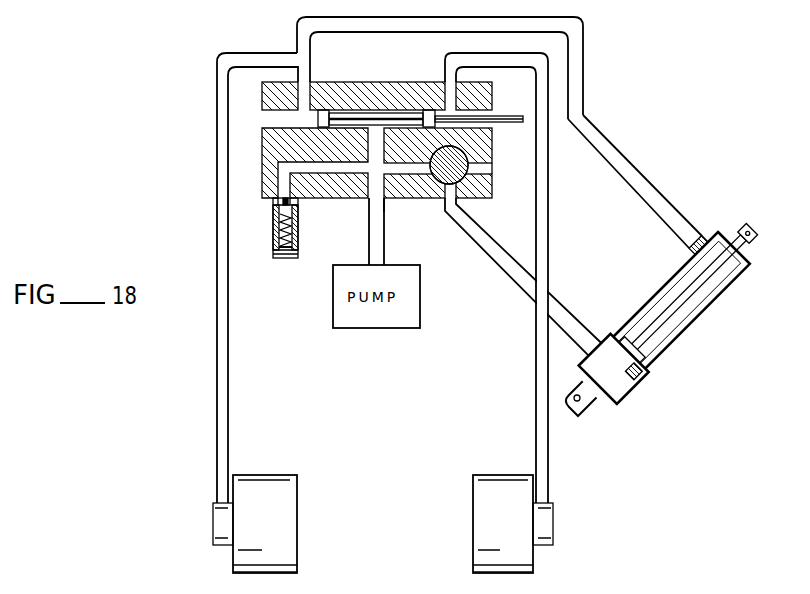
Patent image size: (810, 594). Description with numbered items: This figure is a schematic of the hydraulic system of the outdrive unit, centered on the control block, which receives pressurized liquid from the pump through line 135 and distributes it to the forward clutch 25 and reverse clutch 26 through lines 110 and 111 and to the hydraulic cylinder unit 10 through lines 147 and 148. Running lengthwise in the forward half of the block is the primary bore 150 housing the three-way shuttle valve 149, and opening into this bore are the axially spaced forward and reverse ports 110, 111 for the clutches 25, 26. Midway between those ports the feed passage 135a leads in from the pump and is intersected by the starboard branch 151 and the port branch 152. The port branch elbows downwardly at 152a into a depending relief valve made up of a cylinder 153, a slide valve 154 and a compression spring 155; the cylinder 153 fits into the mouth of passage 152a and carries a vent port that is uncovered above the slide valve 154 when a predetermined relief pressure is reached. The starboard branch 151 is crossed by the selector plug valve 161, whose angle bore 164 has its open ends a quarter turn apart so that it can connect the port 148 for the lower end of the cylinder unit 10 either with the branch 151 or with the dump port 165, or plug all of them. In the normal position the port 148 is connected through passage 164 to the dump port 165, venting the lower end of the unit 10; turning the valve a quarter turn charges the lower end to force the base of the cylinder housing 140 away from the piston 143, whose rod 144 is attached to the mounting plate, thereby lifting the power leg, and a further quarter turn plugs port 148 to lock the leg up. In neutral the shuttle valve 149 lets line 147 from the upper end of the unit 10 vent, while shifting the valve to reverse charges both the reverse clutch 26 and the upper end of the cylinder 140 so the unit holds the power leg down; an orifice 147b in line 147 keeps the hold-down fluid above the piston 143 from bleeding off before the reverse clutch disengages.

The hydraulic cylinder unit 10 is at (662, 297).
The forward clutch 25 is at (488, 515).
The reverse clutch 26 is at (282, 520).
The forward line 110 is at (548, 222).
The reverse line 111 is at (218, 200).
The pump line 135 is at (370, 246).
The feed passage 135a is at (384, 205).
The cylinder housing 140 is at (690, 325).
The piston 143 is at (638, 372).
The piston rod 144 is at (747, 231).
The upper hydraulic line 147 is at (612, 151).
The orifice 147b is at (698, 236).
The lower hydraulic line 148 is at (510, 272).
The three-way shuttle valve 149 is at (383, 113).
The primary bore 150 is at (277, 124).
The starboard branch 151 is at (414, 168).
The port branch 152 is at (346, 166).
The relief passage 152a is at (282, 186).
The relief valve cylinder 153 is at (296, 238).
The slide valve 154 is at (276, 226).
The compression spring 155 is at (280, 244).
The selector plug valve 161 is at (466, 152).
The angle bore 164 is at (462, 206).
The dump port 165 is at (483, 167).